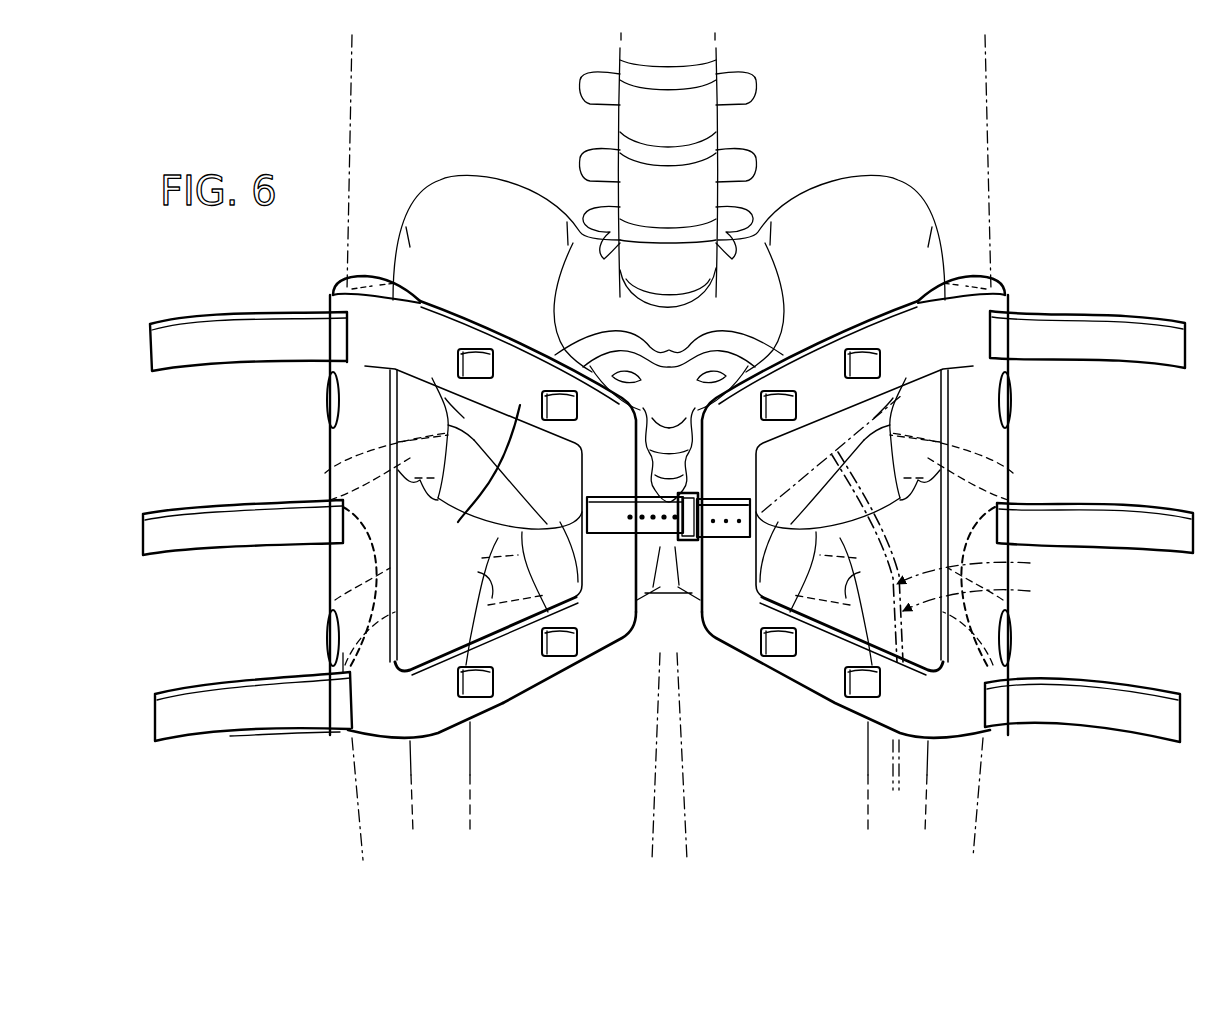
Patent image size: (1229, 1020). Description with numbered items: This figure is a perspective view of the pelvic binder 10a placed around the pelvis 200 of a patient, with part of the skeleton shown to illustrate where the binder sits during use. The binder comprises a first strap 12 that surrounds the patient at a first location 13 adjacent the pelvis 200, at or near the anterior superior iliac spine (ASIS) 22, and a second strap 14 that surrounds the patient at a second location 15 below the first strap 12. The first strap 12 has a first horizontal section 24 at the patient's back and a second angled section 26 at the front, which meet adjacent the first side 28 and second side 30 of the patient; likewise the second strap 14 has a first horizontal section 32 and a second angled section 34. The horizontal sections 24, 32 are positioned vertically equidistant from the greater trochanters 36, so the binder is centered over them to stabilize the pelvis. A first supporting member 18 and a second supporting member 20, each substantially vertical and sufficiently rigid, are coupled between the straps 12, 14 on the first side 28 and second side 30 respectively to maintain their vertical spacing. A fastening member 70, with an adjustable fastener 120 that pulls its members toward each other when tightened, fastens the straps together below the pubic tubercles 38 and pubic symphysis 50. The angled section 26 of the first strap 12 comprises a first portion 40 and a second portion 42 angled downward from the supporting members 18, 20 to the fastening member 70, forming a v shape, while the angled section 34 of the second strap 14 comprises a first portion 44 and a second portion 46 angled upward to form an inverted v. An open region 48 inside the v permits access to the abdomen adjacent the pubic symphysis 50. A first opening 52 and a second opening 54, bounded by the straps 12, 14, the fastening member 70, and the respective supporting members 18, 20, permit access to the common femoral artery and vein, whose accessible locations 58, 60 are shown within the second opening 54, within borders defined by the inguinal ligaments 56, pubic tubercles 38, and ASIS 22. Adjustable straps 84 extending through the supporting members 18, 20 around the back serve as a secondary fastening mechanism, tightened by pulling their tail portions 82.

The pelvic binder 10a is at (1027, 230).
The first strap 12 is at (347, 266).
The first location 13 is at (309, 297).
The second strap 14 is at (338, 746).
The second location 15 is at (317, 666).
The first supporting member 18 is at (340, 576).
The second supporting member 20 is at (1001, 597).
The anterior superior iliac spine (ASIS) 22 is at (398, 278).
The first horizontal section 24 is at (378, 276).
The second angled section 26 is at (482, 482).
The first side 28 is at (268, 763).
The second side 30 is at (1011, 766).
The first horizontal section 32 is at (345, 598).
The second angled section 34 is at (505, 683).
The greater trochanters 36 is at (332, 474).
The pubic tubercles 38 is at (671, 600).
The first portion 40 is at (526, 364).
The second portion 42 is at (818, 364).
The first portion 44 is at (523, 678).
The second portion 46 is at (812, 678).
The open region 48 is at (673, 398).
The pubic symphysis 50 is at (673, 598).
The first opening 52 is at (418, 418).
The second opening 54 is at (919, 464).
The inguinal ligaments 56 is at (835, 447).
The accessible location of the femoral artery 58 is at (949, 621).
The accessible location of the femoral vein 60 is at (985, 594).
The fastening member 70 is at (697, 541).
The tail portions 82 is at (164, 334).
The adjustable straps 84 is at (968, 270).
The adjustable fastener 120 is at (614, 508).
The pelvis 200 is at (866, 184).